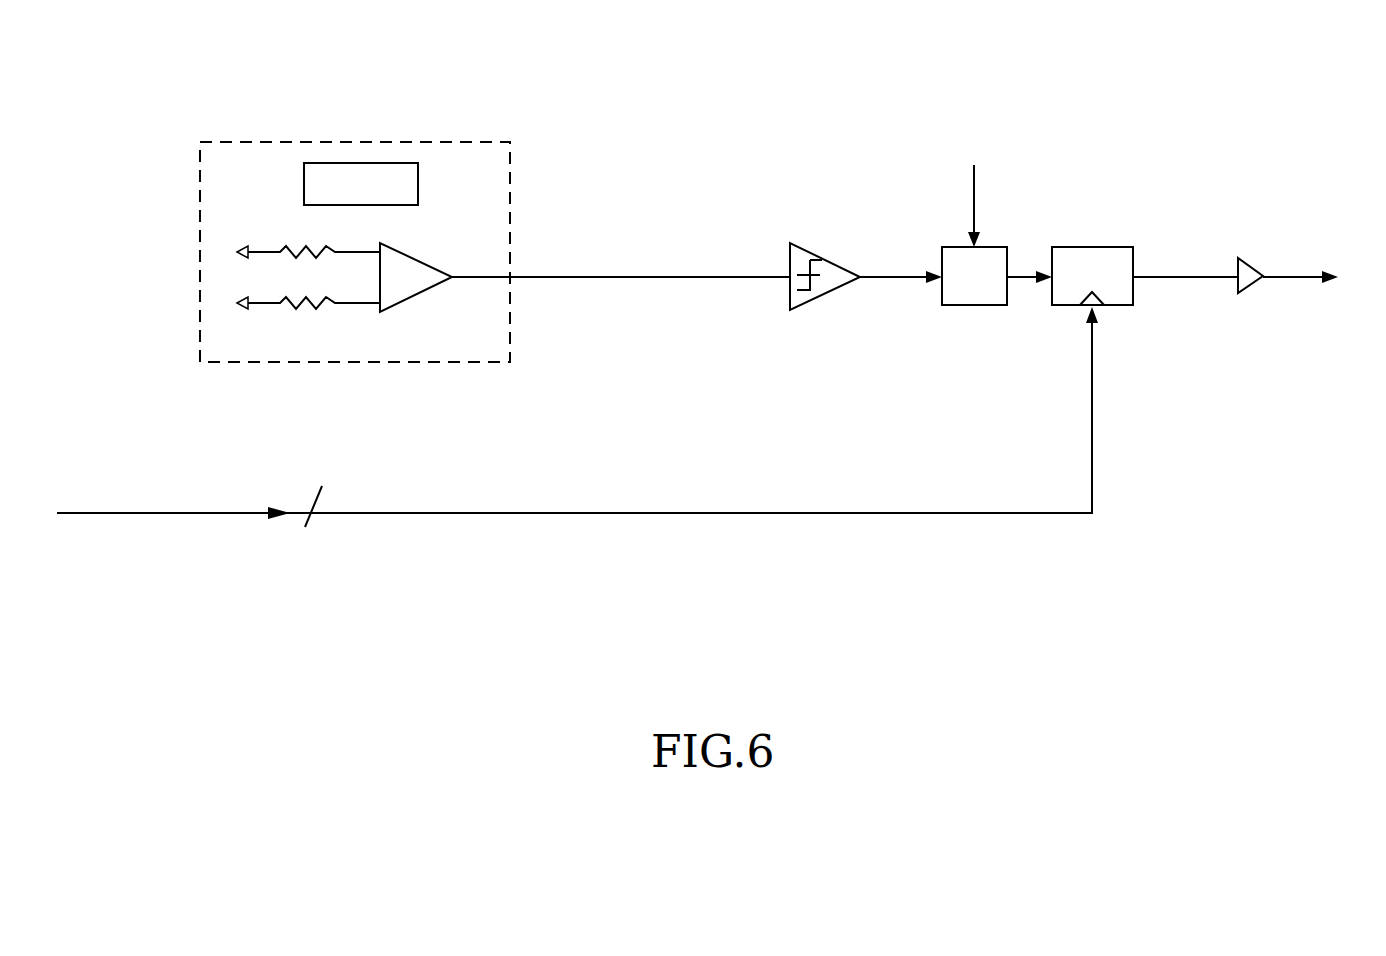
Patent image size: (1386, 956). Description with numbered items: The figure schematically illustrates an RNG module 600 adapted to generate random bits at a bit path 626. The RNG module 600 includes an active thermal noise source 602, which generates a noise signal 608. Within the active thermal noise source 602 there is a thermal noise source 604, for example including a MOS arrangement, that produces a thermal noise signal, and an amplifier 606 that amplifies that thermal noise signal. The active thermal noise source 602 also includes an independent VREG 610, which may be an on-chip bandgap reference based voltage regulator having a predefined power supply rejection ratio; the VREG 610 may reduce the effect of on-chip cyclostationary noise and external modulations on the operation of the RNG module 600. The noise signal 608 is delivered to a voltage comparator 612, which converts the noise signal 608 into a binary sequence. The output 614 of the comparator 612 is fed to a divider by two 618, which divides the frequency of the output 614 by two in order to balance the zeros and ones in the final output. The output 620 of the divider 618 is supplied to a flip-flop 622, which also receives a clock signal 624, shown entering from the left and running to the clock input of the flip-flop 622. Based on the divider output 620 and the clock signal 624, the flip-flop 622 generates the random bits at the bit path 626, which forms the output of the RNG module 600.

The RNG module 600 is at (1258, 600).
The active thermal noise source 602 is at (268, 84).
The thermal noise source 604 is at (318, 305).
The amplifier 606 is at (410, 257).
The noise signal 608 is at (592, 277).
The VREG 610 is at (418, 183).
The voltage comparator 612 is at (815, 300).
The output of comparator 614 is at (896, 277).
The divider by two 618 is at (965, 305).
The output of divider 620 is at (1020, 270).
The flip-flop 622 is at (1095, 247).
The clock signal 624 is at (1093, 387).
The bit path 626 is at (1280, 275).